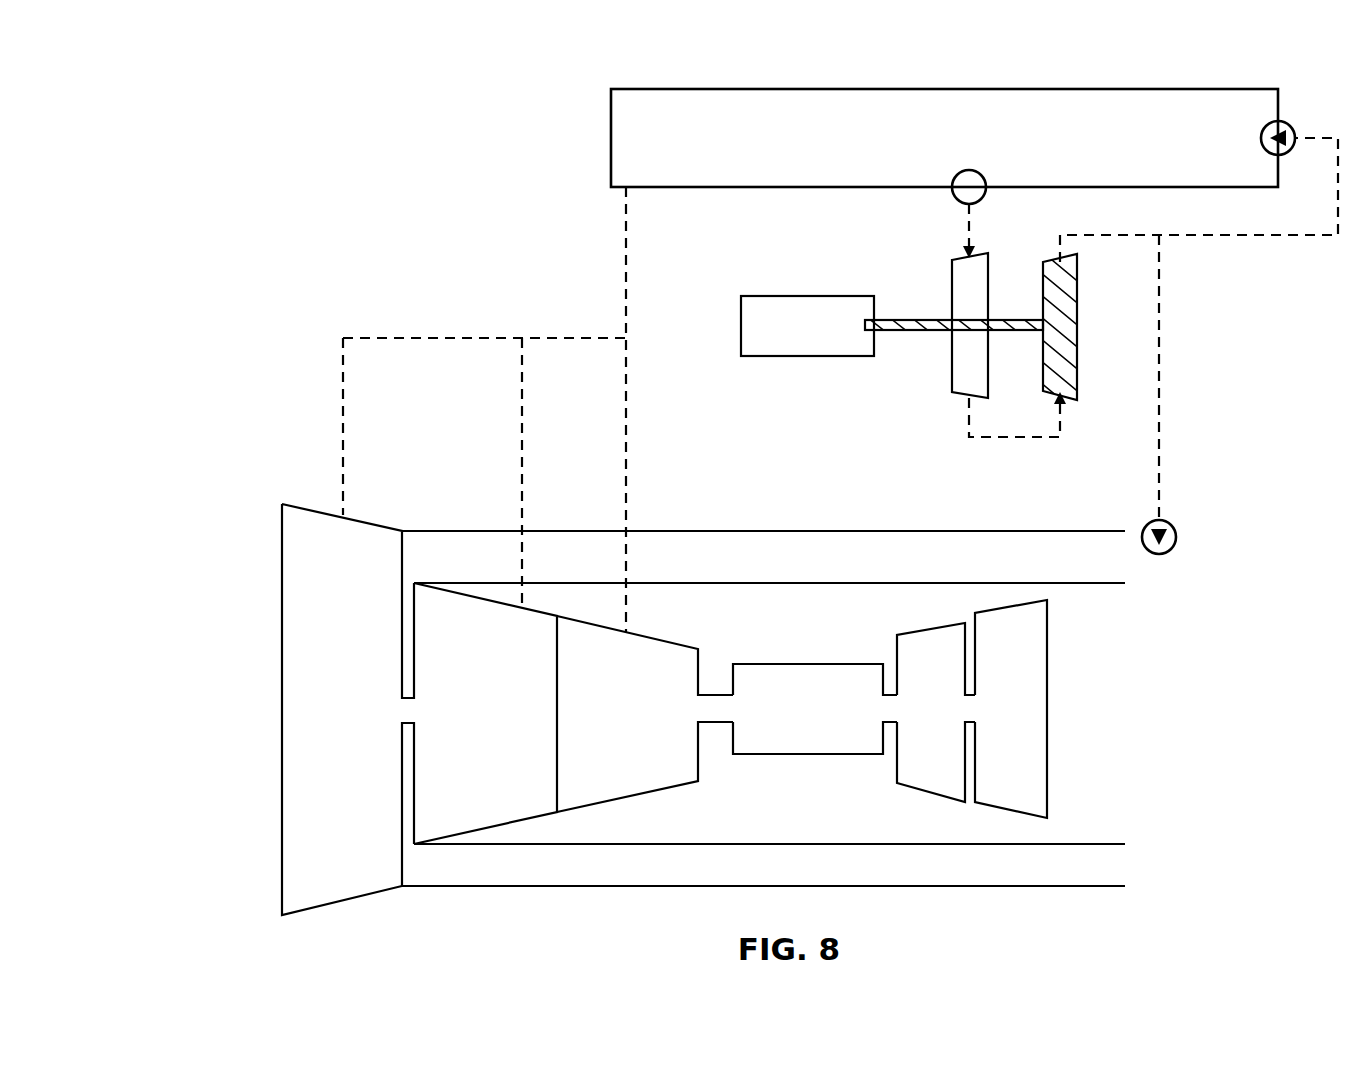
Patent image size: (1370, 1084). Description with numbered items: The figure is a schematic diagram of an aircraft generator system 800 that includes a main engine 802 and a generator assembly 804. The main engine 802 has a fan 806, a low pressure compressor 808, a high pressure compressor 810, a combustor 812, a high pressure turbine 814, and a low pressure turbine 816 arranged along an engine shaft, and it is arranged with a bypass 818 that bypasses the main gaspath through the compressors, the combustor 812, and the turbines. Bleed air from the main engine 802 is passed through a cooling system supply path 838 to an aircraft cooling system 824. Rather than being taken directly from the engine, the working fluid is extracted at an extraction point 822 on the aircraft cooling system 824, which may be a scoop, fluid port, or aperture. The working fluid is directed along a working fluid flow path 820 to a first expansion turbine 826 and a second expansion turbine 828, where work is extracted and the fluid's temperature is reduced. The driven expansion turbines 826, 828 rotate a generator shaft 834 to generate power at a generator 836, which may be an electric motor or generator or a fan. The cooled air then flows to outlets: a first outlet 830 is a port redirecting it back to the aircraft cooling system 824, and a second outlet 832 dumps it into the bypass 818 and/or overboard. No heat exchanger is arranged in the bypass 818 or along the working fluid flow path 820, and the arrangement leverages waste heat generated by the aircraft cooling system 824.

The aircraft generator system 800 is at (242, 127).
The main engine 802 is at (261, 653).
The generator assembly 804 is at (873, 367).
The fan 806 is at (354, 878).
The low pressure compressor 808 is at (475, 797).
The high pressure compressor 810 is at (588, 777).
The combustor 812 is at (780, 728).
The high pressure turbine 814 is at (918, 773).
The low pressure turbine 816 is at (1013, 792).
The bypass 818 is at (1095, 865).
The working fluid flow path 820 is at (968, 224).
The extraction point 822 is at (980, 200).
The aircraft cooling system 824 is at (1040, 108).
The first expansion turbine 826 is at (962, 385).
The second expansion turbine 828 is at (1083, 372).
The first outlet 830 is at (1285, 120).
The second outlet 832 is at (1178, 540).
The generator shaft 834 is at (920, 338).
The generator 836 is at (810, 308).
The cooling system supply path 838 is at (578, 337).